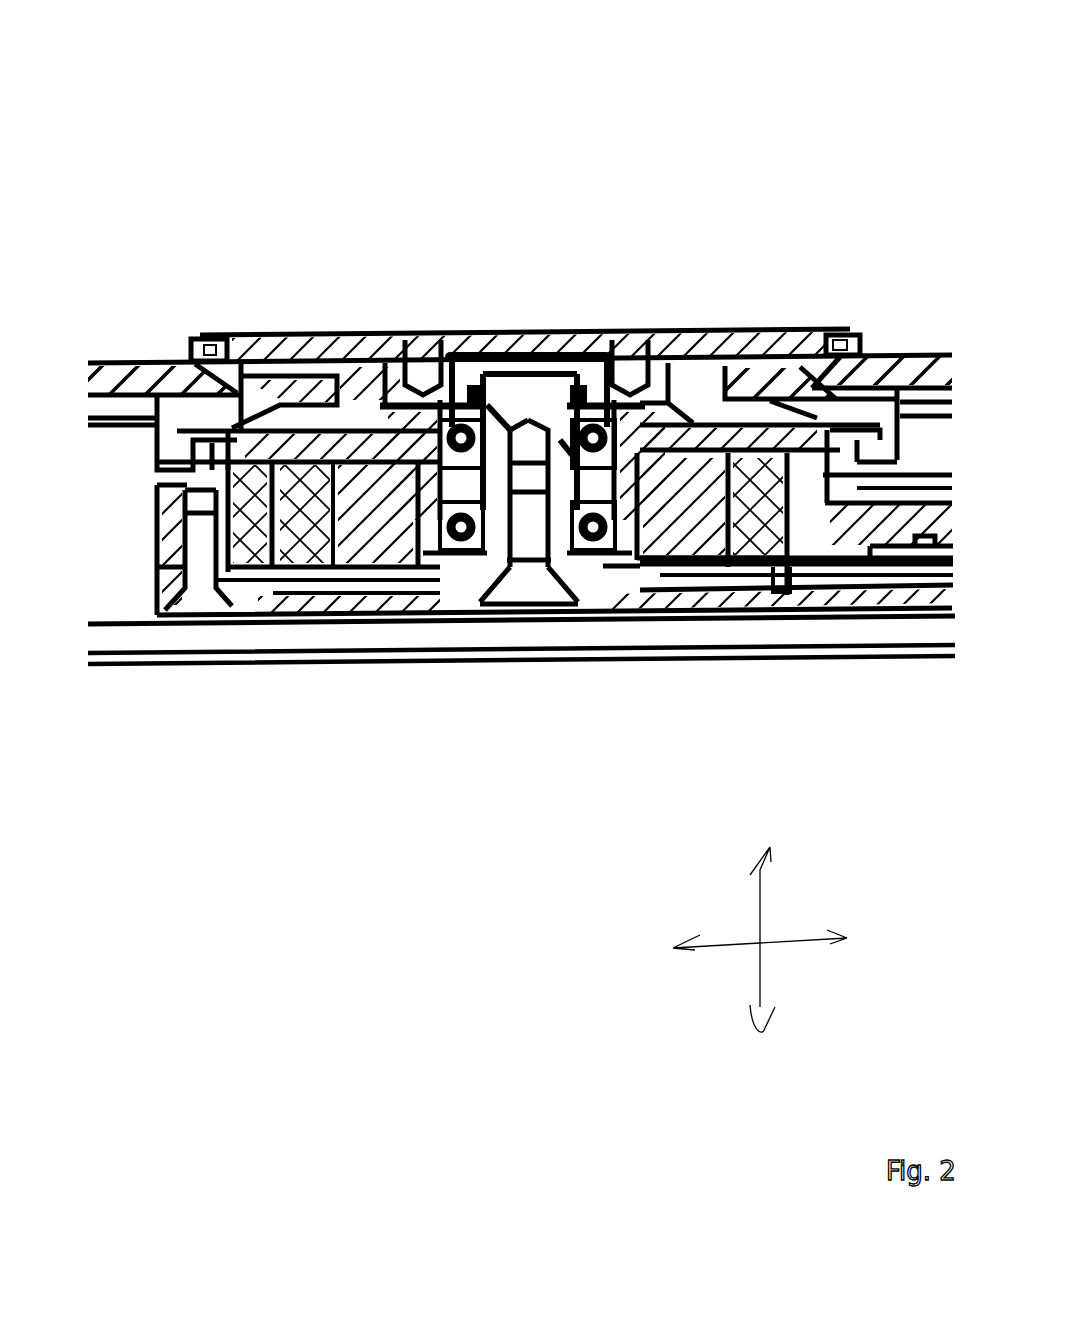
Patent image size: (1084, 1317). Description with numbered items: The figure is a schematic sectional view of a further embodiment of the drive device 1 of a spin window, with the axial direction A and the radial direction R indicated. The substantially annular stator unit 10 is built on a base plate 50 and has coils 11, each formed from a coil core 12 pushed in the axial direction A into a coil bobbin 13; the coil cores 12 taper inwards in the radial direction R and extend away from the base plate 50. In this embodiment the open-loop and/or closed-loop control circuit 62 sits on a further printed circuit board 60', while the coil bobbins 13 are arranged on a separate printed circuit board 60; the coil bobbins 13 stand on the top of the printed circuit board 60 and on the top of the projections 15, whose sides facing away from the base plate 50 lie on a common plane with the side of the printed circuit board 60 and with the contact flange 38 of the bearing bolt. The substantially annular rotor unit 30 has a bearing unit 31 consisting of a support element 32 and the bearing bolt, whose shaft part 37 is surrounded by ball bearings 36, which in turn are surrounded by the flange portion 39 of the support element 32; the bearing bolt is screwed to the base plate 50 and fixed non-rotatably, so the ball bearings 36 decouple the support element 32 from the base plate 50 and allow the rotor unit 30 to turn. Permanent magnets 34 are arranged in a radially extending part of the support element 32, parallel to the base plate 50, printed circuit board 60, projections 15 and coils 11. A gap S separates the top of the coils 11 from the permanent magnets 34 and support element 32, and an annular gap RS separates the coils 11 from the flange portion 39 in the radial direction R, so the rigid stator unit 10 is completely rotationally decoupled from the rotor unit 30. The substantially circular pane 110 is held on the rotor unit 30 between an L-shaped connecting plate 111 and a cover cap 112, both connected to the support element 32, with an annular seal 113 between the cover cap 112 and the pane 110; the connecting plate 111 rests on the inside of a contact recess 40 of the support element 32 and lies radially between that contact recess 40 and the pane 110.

The drive device 1 is at (771, 167).
The stator unit 10 is at (290, 590).
The coils 11 is at (345, 580).
The coil cores 12 is at (690, 590).
The coil bobbins 13 is at (612, 565).
The projections 15 is at (320, 600).
The rotor unit 30 is at (85, 330).
The bearing unit 31 is at (546, 345).
The support element 32 is at (375, 360).
The permanent magnets 34 is at (250, 350).
The ball bearings 36 is at (521, 395).
The shaft part 37 is at (576, 352).
The contact flange 38 is at (522, 600).
The flange portion 39 is at (400, 600).
The contact recess 40 is at (420, 360).
The base plate 50 is at (800, 600).
The printed circuit board 60 is at (796, 674).
The further printed circuit board 60' is at (814, 673).
The open-loop and/or closed-loop control circuit 62 is at (940, 590).
The pane 110 is at (190, 418).
The connecting plate 111 is at (302, 372).
The cover cap 112 is at (540, 405).
The annular seal 113 is at (213, 347).
The annular gap RS is at (442, 600).
The gap S is at (160, 605).
The axial direction A is at (776, 941).
The radial direction R is at (774, 949).